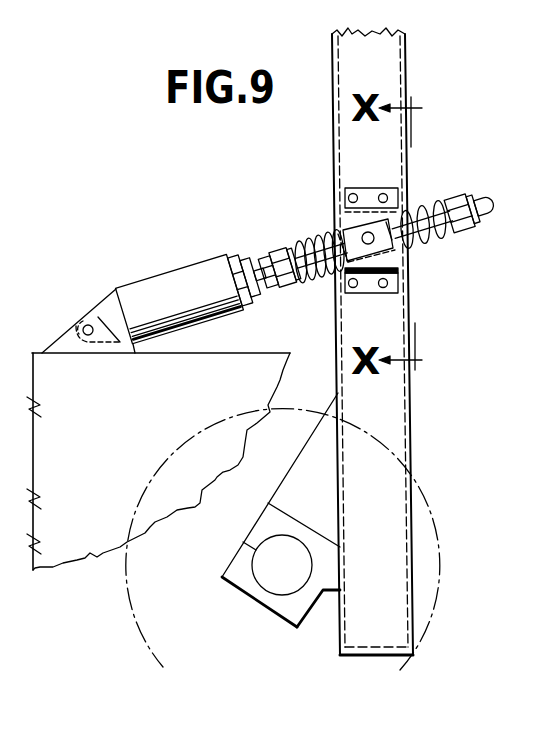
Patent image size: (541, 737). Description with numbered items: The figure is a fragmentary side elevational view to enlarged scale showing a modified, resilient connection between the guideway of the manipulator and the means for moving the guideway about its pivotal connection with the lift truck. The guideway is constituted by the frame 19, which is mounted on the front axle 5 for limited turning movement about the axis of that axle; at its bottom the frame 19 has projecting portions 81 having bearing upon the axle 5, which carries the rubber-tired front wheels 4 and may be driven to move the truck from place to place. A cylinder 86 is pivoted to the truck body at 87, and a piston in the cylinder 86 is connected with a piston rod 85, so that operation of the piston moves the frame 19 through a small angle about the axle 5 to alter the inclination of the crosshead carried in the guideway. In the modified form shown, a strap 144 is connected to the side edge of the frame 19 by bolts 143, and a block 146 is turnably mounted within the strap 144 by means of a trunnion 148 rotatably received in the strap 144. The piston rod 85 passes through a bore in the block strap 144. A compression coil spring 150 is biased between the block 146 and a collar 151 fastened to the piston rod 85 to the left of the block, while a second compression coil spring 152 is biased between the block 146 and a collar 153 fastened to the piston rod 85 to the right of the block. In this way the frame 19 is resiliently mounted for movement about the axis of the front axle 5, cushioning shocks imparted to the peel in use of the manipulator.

The wheels 4 is at (433, 500).
The axle 5 is at (272, 581).
The frame 19 is at (404, 58).
The projecting portions 81 is at (292, 518).
The piston rod 85 is at (257, 277).
The cylinder 86 is at (202, 267).
The pivot 87 is at (84, 326).
The bolts 143 is at (345, 190).
The strap 144 is at (395, 257).
The block 146 is at (370, 222).
The trunnion 148 is at (364, 236).
The compression coil spring 150 is at (326, 265).
The collar 151 is at (287, 285).
The compression coil spring 152 is at (427, 203).
The collar 153 is at (467, 223).